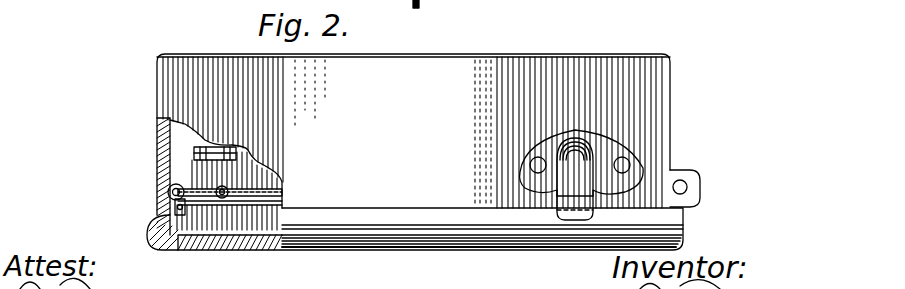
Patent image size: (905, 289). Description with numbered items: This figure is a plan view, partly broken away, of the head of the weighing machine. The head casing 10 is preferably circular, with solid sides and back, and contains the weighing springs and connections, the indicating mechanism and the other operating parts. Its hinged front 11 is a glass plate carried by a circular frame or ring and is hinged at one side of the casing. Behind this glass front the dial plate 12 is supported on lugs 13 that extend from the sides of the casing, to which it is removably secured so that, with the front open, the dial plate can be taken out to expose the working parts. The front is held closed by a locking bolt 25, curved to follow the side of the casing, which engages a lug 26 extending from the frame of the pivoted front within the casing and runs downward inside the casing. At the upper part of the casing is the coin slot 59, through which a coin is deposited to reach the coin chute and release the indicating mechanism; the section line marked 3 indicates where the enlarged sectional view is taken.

The lugs 3 is at (708, 181).
The head casing 10 is at (413, 144).
The hinged front 11 is at (134, 231).
The dial plate 12 is at (240, 192).
The lugs 13 is at (212, 150).
The locking bolt 25 is at (168, 190).
The lug 26 is at (157, 212).
The coin slot 59 is at (578, 221).